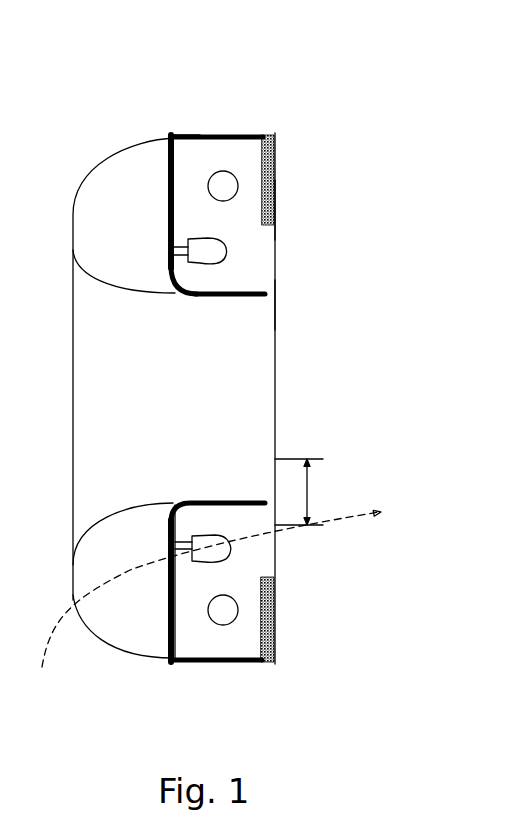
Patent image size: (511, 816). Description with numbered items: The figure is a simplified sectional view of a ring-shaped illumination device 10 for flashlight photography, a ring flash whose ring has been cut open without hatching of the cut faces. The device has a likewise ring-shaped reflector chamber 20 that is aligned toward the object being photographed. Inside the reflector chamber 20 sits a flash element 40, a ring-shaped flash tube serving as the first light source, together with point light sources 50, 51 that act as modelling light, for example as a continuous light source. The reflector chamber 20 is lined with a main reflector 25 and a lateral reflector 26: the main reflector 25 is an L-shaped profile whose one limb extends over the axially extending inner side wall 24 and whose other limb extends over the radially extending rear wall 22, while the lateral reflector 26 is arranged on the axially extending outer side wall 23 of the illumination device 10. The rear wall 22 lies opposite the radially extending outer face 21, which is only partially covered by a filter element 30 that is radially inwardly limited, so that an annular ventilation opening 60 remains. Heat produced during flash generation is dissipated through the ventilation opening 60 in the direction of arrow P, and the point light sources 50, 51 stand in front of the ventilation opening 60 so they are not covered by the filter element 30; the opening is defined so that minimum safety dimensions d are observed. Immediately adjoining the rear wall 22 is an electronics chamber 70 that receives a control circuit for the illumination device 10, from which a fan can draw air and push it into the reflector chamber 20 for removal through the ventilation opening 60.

The illumination device 10 is at (346, 116).
The reflector chamber 20 is at (226, 213).
The radially extending outer face 21 is at (280, 212).
The radially extending rear wall 22 is at (166, 237).
The axially extending outer side wall 23 is at (250, 125).
The axially extending inner side wall 24 is at (196, 302).
The main reflector 25 is at (219, 303).
The lateral reflector 26 is at (209, 127).
The filter element 30 is at (280, 182).
The flash element 40 is at (225, 185).
The point light source 50 is at (207, 252).
The point light source 51 is at (215, 553).
The ventilation opening 60 is at (279, 283).
The electronics chamber 70 is at (123, 178).
The arrow P is at (343, 529).
The minimum safety dimensions d is at (299, 492).